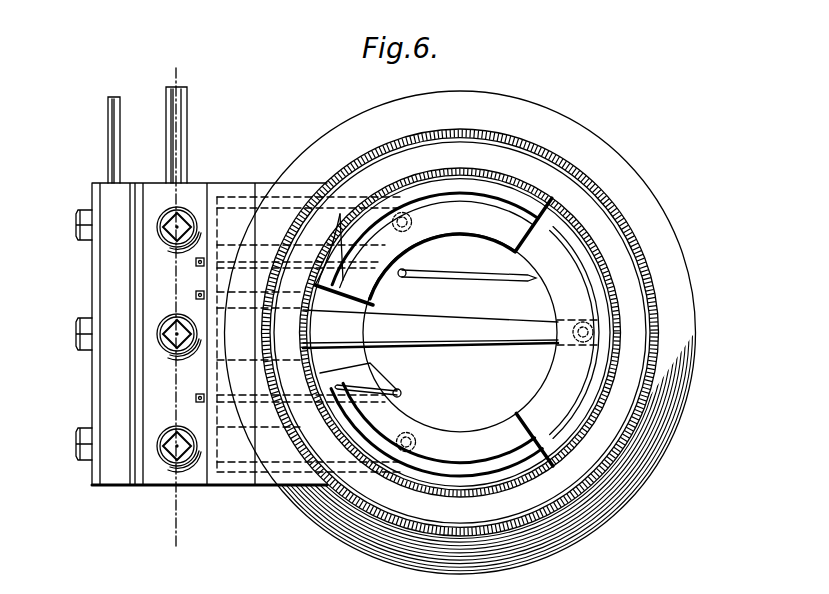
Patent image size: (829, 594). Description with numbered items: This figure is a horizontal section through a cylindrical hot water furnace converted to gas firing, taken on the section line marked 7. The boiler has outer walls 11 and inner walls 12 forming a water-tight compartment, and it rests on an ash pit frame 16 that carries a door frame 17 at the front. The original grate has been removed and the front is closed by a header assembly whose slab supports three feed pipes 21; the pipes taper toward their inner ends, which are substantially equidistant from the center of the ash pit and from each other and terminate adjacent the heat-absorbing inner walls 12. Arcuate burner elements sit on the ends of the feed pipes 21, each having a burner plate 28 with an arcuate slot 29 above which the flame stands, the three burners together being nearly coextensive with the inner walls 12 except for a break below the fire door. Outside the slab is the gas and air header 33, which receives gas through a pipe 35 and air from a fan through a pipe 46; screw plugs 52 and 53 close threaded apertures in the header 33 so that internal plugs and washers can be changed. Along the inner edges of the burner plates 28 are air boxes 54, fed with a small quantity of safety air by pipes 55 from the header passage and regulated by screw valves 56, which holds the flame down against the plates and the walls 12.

The section line 7- 7 is at (176, 305).
The outer walls 11 is at (640, 424).
The inner walls 12 is at (574, 458).
The ash pit frame 16 is at (682, 378).
The door frame 17 is at (271, 480).
The feed pipes 21 is at (257, 207).
The burner plate 28 is at (523, 192).
The arcuate slot 29 is at (470, 193).
The gas and air header 33 is at (100, 280).
The pipe 35 is at (108, 141).
The pipe 46 is at (187, 148).
The screw plugs 52 is at (82, 427).
The screw plugs 53 is at (165, 334).
The air boxes 54 is at (485, 230).
The pipes 55 is at (407, 272).
The screw valves 56 is at (195, 264).